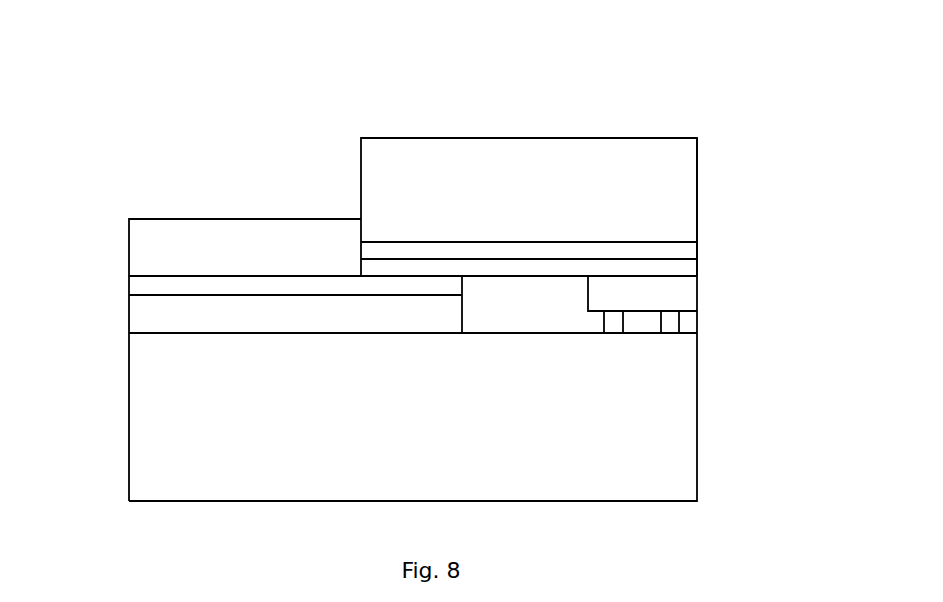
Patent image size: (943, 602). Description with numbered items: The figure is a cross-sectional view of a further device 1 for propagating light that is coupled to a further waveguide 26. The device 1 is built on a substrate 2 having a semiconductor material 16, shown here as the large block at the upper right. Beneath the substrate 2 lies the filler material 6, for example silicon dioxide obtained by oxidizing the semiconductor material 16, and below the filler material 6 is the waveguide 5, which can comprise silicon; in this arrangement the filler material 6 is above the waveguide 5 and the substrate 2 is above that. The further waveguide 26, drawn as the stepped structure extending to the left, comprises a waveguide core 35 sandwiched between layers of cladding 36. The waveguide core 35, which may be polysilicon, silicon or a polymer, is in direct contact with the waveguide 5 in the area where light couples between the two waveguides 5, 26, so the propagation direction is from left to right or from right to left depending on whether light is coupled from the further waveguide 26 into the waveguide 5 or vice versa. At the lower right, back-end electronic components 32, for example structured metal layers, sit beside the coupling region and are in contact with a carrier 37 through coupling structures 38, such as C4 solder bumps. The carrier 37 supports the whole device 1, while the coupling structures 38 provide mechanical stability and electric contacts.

The device for propagating light 1 is at (415, 119).
The substrate 2 is at (578, 207).
The semiconductor material 16 is at (677, 190).
The filler material 6 is at (692, 255).
The waveguide 5 is at (692, 268).
The further waveguide 26 is at (142, 209).
The cladding 36 is at (150, 245).
The waveguide core 35 is at (150, 287).
The back-end electronic components 32 is at (690, 294).
The coupling structures 38 is at (673, 323).
The carrier 37 is at (685, 402).